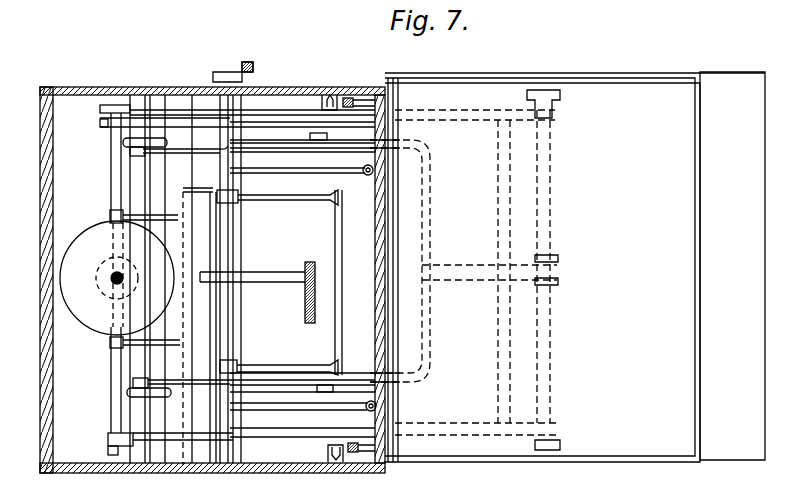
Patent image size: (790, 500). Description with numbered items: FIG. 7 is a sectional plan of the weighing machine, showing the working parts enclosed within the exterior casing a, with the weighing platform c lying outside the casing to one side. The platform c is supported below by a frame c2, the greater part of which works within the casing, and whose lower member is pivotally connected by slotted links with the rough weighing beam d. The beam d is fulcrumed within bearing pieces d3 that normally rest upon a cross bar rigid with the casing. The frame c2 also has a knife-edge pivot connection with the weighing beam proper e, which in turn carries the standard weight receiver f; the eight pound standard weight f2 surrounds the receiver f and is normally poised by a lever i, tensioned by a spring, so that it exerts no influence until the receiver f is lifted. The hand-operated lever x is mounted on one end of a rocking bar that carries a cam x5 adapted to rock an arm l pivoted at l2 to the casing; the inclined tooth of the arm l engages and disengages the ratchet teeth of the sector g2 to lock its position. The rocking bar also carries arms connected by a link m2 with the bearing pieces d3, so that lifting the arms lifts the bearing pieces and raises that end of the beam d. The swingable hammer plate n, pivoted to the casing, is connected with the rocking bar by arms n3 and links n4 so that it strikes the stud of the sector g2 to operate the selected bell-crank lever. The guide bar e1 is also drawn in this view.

The exterior casing a is at (575, 278).
The weighing platform c is at (684, 266).
The frame c2 is at (556, 214).
The rough weighing beam d is at (456, 262).
The bearing pieces d3 is at (140, 140).
The weighing beam proper e is at (268, 112).
The lower guide bar e1 is at (321, 448).
The standard weight receiver f is at (111, 278).
The eight pound standard weight f2 is at (97, 332).
The ratchet toothed sector g2 is at (305, 312).
The lever i is at (132, 214).
The arm l is at (256, 272).
The pivot l2 is at (199, 326).
The link m2 is at (150, 268).
The swingable hammer plate n is at (343, 290).
The arms n3 is at (240, 196).
The links n4 is at (287, 282).
The hand-operated lever x is at (232, 62).
The cam x5 is at (225, 266).